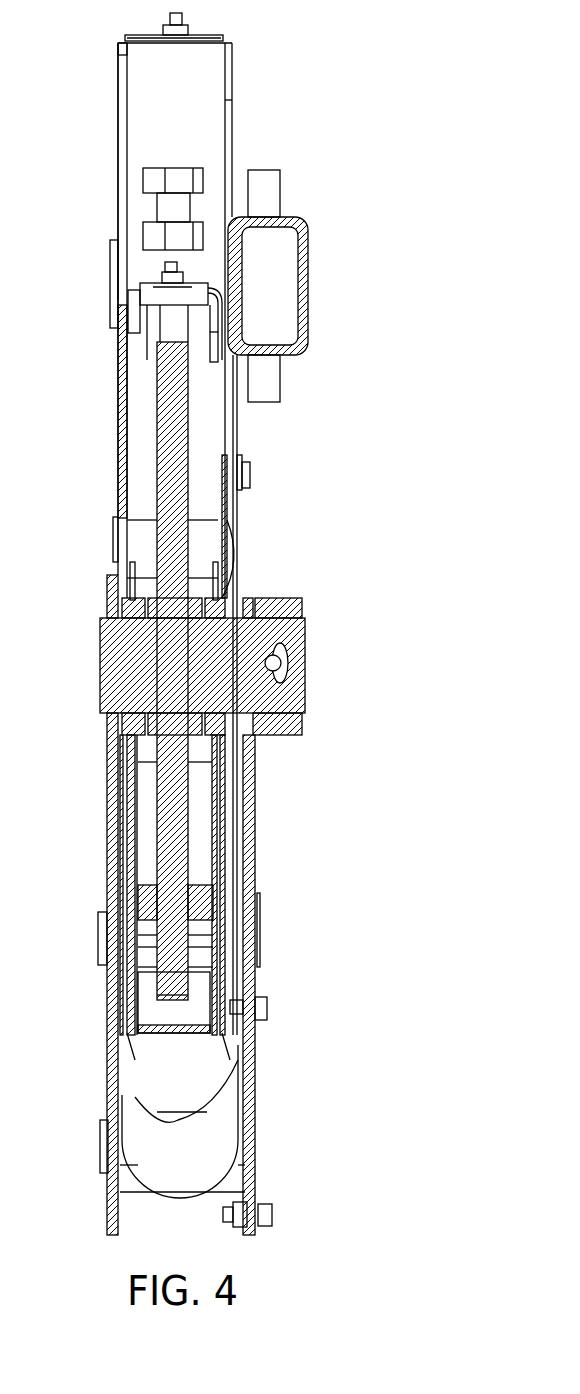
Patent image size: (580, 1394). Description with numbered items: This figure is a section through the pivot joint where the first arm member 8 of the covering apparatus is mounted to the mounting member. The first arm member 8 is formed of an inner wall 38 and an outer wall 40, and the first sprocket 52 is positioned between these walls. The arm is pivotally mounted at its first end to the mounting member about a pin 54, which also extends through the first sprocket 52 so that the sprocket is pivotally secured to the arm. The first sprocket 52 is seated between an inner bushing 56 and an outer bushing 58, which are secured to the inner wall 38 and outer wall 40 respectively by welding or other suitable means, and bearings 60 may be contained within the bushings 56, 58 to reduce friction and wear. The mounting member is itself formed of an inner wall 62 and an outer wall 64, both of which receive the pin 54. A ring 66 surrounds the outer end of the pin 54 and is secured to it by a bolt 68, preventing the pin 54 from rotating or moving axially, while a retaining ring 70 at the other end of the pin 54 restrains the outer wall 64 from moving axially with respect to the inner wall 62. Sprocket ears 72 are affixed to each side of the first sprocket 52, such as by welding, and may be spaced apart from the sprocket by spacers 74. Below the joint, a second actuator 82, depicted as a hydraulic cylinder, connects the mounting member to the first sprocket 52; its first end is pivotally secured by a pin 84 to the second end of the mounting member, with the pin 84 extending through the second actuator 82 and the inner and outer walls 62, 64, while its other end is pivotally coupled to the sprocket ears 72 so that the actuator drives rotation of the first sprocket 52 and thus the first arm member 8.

The first arm member 8 is at (118, 210).
The inner wall 38 is at (117, 133).
The outer wall 40 is at (233, 117).
The first sprocket 52 is at (190, 437).
The pin 54 is at (305, 633).
The inner bushing 56 is at (113, 592).
The outer bushing 58 is at (225, 598).
The bearings 60 is at (243, 600).
The inner wall 62 is at (107, 813).
The outer wall 64 is at (255, 820).
The ring 66 is at (302, 732).
The bolt 68 is at (290, 668).
The retaining ring 70 is at (103, 716).
The sprocket ears 72 is at (138, 813).
The spacers 74 is at (140, 885).
The second actuator 82 is at (227, 1120).
The pin 84 is at (100, 1147).